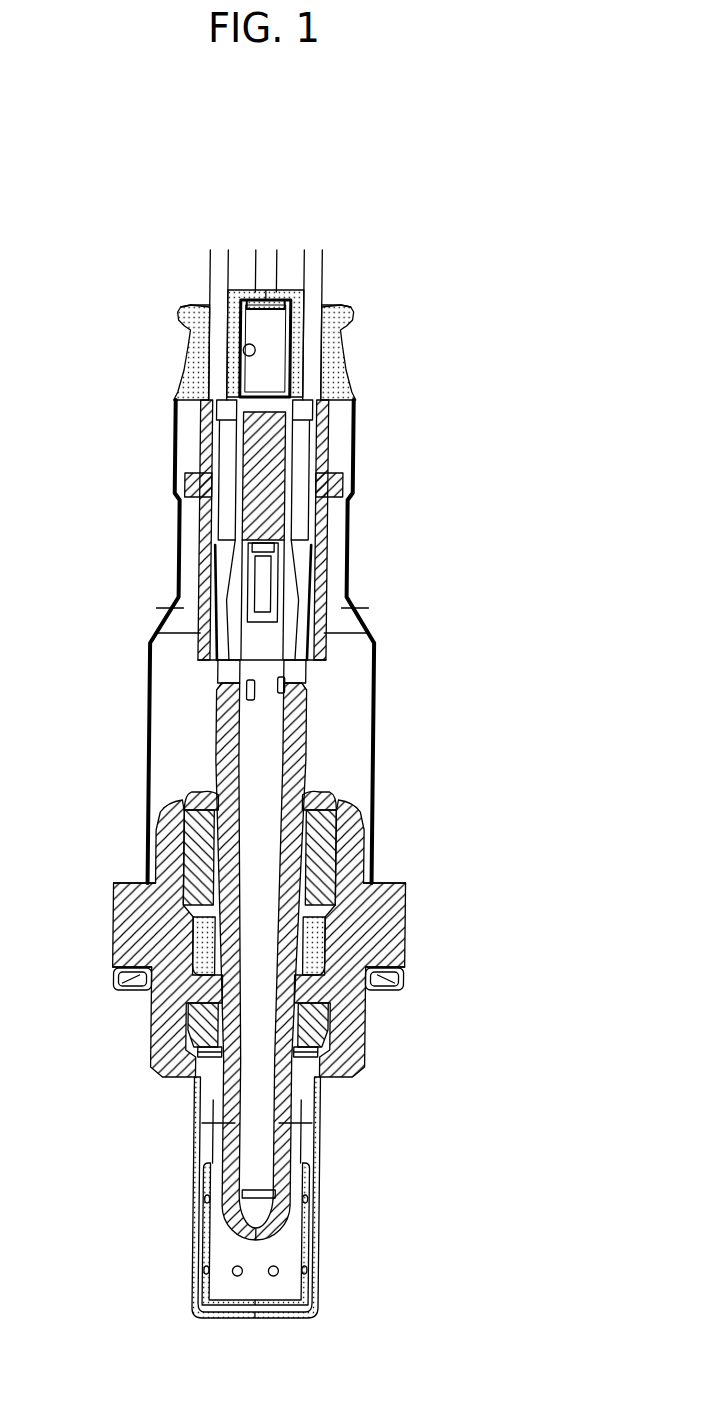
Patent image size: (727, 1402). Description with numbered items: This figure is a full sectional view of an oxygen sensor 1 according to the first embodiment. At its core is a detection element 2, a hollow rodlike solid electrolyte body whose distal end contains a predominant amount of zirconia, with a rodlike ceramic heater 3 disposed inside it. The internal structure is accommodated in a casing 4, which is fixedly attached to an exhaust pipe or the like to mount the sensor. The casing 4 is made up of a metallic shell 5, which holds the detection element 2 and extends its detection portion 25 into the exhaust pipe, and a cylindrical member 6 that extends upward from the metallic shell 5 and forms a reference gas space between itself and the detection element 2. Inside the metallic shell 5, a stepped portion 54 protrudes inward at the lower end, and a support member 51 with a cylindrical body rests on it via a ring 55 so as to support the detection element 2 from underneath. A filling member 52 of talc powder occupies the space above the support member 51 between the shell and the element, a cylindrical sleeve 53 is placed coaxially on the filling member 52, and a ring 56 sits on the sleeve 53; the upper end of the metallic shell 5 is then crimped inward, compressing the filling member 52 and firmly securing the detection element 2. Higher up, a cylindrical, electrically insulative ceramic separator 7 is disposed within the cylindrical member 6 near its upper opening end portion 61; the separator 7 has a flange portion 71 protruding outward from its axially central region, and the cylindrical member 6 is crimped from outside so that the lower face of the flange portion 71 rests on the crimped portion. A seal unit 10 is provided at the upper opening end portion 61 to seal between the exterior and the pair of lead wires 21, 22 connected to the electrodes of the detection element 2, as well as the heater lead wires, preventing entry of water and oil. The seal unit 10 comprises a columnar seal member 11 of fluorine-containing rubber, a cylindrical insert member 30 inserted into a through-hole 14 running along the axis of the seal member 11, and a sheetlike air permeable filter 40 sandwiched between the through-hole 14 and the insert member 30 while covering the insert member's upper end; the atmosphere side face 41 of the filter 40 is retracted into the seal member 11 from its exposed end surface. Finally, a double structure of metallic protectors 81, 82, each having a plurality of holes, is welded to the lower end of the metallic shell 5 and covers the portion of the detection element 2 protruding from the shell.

The oxygen sensor 1 is at (527, 193).
The seal unit 10 is at (348, 280).
The seal member 11 is at (202, 302).
The through-hole 14 is at (245, 353).
The detection element 2 is at (213, 704).
The lead wire 21 is at (216, 257).
The lead wire 22 is at (315, 257).
The detection portion 25 is at (228, 1225).
The ceramic heater 3 is at (267, 1147).
The cylindrical insert member 30 is at (292, 373).
The casing 4 is at (55, 800).
The air permeable filter 40 is at (293, 335).
The atmosphere side face 41 is at (270, 300).
The metallic shell 5 is at (113, 905).
The support member 51 is at (322, 1033).
The filling member 52 is at (322, 933).
The sleeve 53 is at (333, 845).
The stepped portion 54 is at (183, 1077).
The ring 55 is at (207, 1040).
The ring 56 is at (333, 800).
The cylindrical member 6 is at (147, 823).
The upper opening end portion 61 is at (348, 322).
The separator 7 is at (330, 427).
The flange portion 71 is at (340, 488).
The metallic protector 81 is at (305, 1247).
The metallic protector 82 is at (320, 1218).